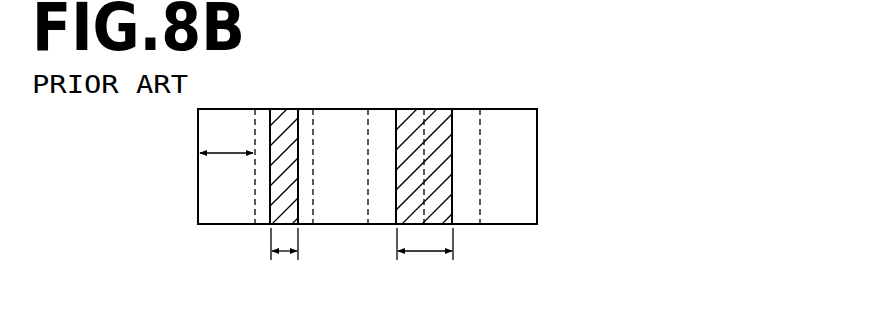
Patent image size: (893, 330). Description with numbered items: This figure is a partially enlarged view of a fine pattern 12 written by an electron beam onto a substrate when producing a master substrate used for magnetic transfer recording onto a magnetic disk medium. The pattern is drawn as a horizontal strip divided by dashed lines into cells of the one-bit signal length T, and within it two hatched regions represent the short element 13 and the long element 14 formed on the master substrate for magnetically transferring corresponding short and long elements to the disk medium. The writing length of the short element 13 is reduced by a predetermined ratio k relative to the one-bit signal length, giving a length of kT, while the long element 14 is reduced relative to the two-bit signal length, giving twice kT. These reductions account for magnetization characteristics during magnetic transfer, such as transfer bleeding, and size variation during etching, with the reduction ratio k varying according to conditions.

The fine pattern 12 is at (547, 87).
The short element 13 is at (280, 112).
The long element 14 is at (407, 112).